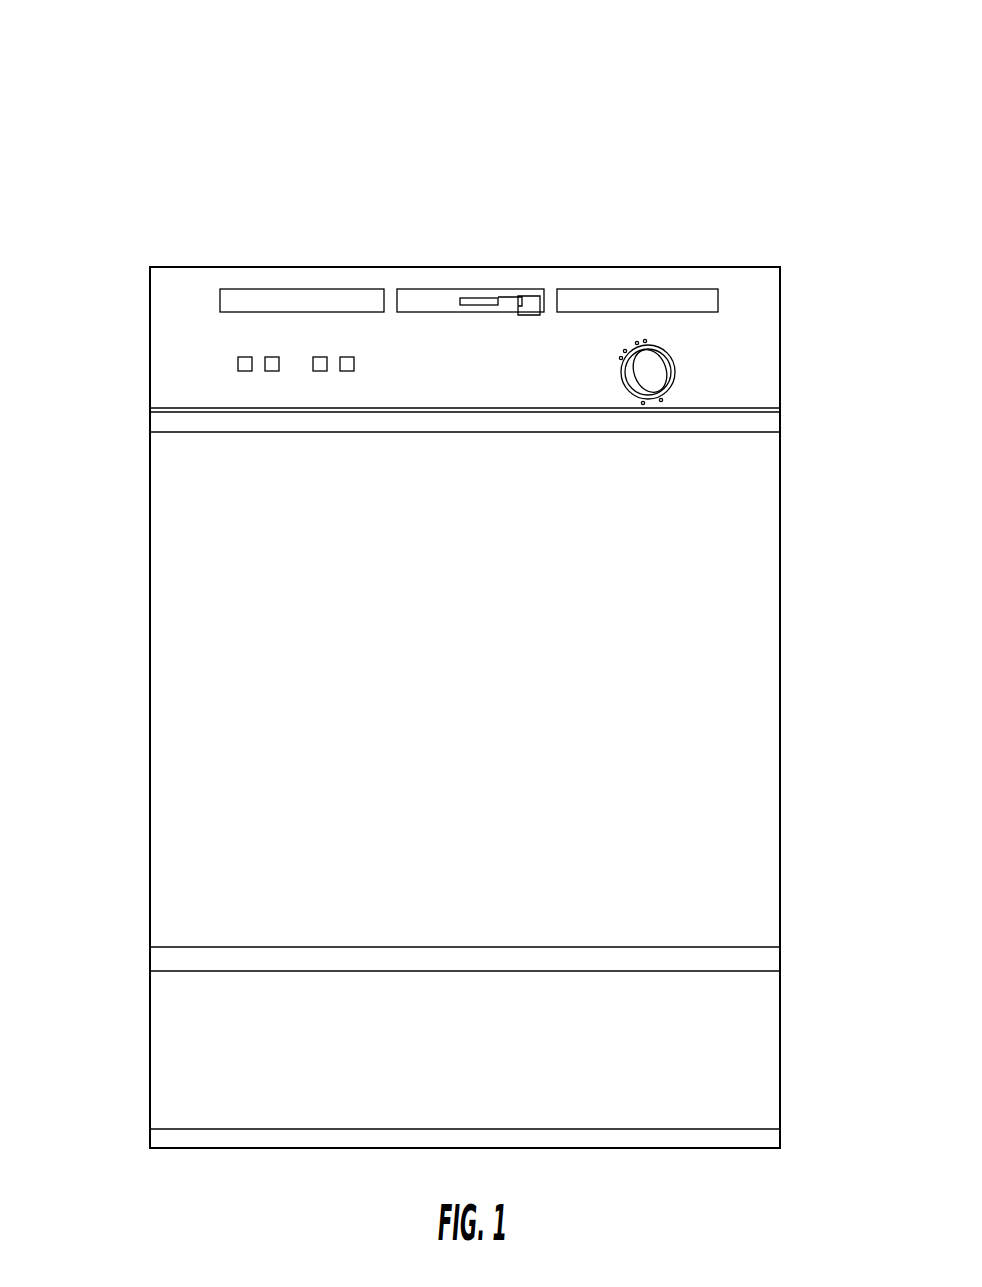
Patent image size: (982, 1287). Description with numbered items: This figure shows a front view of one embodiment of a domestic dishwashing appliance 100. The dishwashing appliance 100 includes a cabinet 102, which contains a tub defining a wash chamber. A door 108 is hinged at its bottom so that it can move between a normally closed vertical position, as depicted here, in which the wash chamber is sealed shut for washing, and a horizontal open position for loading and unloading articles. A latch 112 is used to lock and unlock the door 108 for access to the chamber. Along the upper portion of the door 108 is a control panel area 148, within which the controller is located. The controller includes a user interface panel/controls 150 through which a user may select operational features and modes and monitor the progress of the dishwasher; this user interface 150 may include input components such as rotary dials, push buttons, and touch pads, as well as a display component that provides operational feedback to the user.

The dishwashing appliance 100 is at (702, 152).
The cabinet 102 is at (147, 492).
The door 108 is at (730, 665).
The latch 112 is at (528, 305).
The control panel area 148 is at (753, 313).
The user interface panel/controls 150 is at (324, 356).